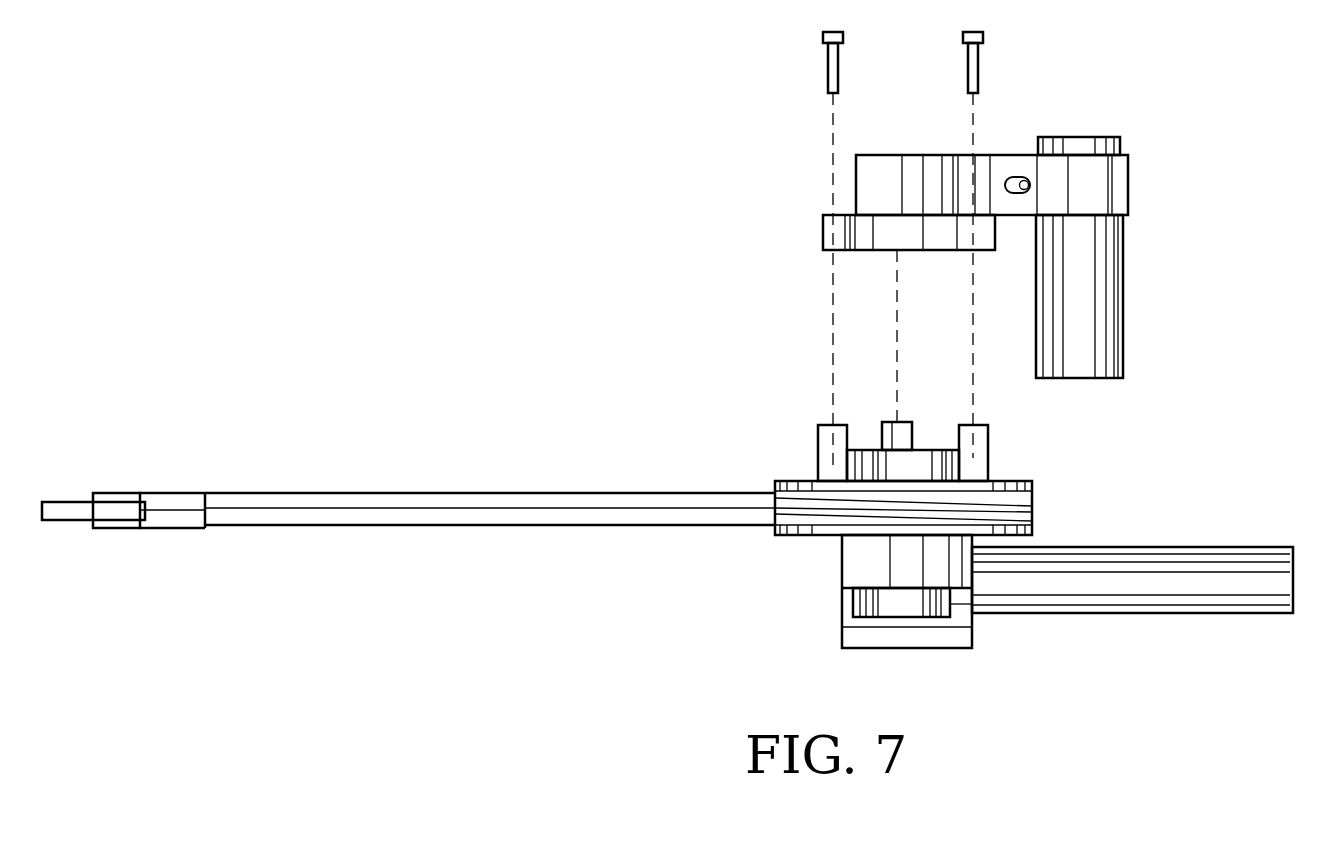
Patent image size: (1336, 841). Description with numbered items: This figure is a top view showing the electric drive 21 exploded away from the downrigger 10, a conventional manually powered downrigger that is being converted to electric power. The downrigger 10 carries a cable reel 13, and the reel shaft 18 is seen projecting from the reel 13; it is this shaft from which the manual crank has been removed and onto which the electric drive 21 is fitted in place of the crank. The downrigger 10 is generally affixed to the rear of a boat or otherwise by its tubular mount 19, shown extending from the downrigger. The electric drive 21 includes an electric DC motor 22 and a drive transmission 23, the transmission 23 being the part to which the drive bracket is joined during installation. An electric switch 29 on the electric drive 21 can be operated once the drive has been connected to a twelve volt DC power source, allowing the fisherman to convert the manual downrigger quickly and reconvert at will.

The downrigger 10 is at (687, 348).
The cable reel 13 is at (1054, 504).
The reel shaft 18 is at (902, 430).
The tubular mount 19 is at (1273, 526).
The electric drive 21 is at (1163, 97).
The electric DC motor 22 is at (1106, 295).
The drive transmission 23 is at (872, 170).
The electric switch 29 is at (1017, 180).